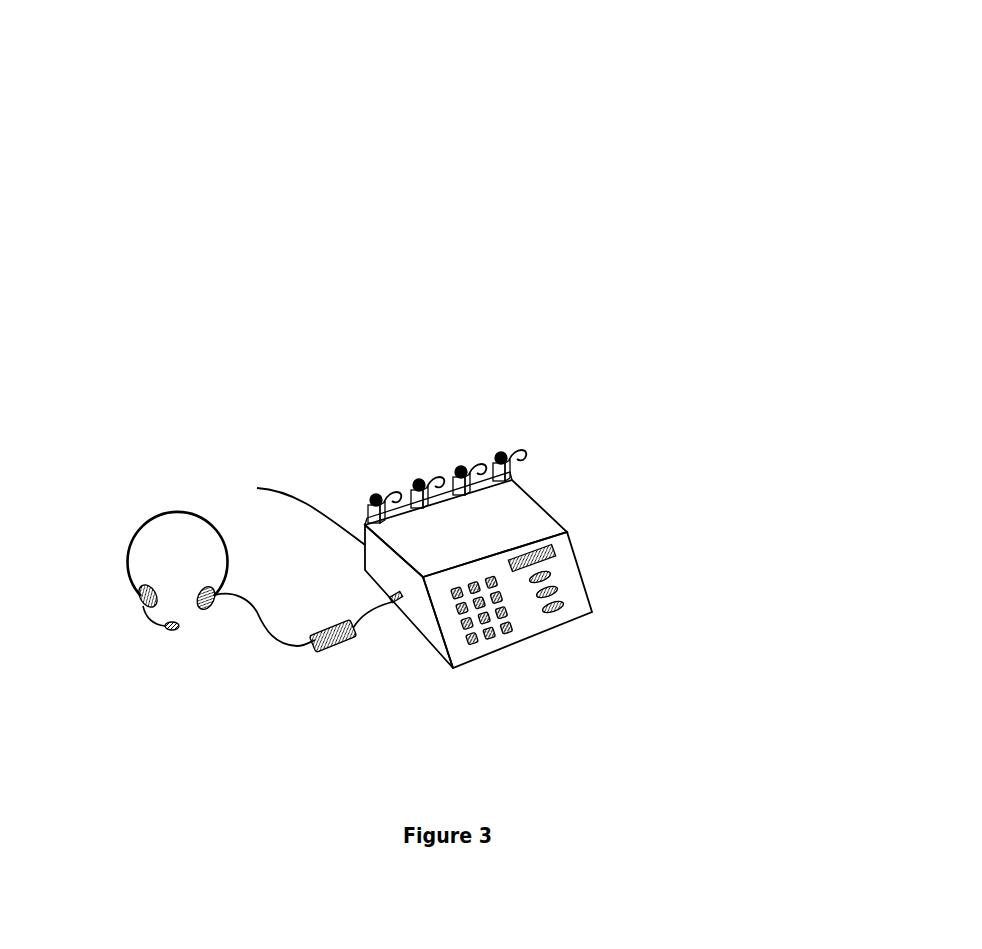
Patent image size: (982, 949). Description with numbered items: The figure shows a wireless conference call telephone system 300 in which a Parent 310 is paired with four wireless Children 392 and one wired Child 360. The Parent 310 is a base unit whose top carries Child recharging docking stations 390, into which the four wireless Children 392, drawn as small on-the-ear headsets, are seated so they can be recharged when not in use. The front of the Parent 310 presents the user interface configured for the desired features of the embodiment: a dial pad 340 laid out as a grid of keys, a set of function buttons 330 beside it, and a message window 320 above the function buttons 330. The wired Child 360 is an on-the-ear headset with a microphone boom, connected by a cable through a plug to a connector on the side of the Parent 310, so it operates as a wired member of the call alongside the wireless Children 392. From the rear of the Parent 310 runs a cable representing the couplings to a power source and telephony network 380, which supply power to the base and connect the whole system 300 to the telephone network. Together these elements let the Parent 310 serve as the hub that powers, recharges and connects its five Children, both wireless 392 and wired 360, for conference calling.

The telephone base system with headset children 300 is at (430, 42).
The Parent 310 is at (428, 653).
The message window 320 is at (563, 553).
The function buttons 330 is at (571, 613).
The dial pad 340 is at (501, 644).
The wired Child 360 is at (259, 612).
The couplings to a power source and telephony network 380 is at (202, 480).
The Child recharging docking stations 390 is at (481, 443).
The wireless Children 392 is at (657, 439).